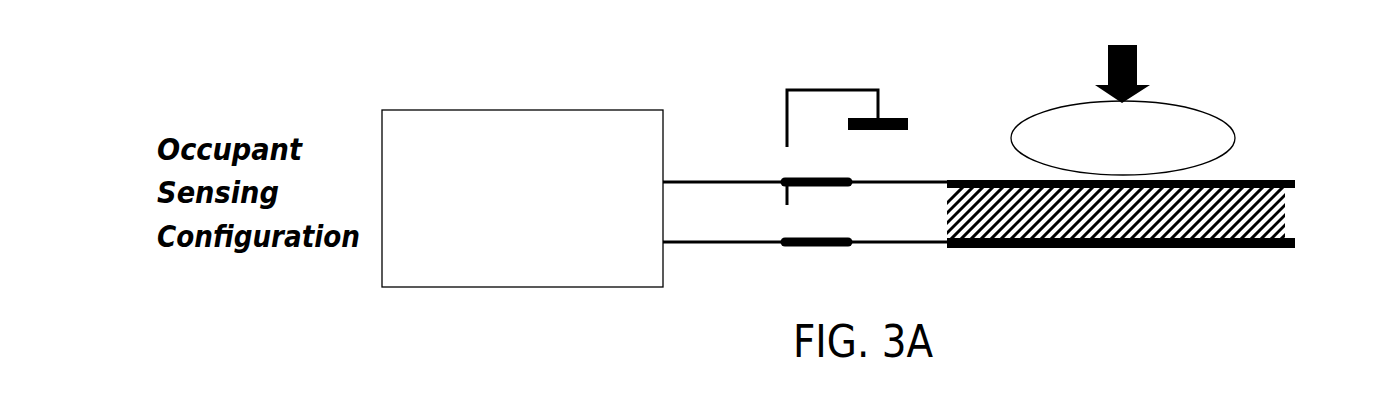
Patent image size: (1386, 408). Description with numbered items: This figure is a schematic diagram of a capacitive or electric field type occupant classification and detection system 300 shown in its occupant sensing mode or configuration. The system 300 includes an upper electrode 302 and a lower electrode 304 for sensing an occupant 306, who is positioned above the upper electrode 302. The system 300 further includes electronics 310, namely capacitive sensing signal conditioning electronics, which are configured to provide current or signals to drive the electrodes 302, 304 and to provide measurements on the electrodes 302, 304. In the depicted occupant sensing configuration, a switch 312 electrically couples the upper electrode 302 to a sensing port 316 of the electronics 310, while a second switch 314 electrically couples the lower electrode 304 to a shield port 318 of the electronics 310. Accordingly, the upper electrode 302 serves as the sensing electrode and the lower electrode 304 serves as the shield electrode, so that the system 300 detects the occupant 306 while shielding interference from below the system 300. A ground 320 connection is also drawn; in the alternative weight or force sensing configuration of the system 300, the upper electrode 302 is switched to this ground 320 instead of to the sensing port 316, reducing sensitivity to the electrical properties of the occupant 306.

The system 300 is at (997, 67).
The upper electrode 302 is at (1272, 180).
The lower electrode 304 is at (1263, 248).
The occupant 306 is at (1212, 115).
The electronics 310 is at (567, 110).
The switch 312 is at (848, 186).
The switch 314 is at (830, 246).
The sensing port 316 is at (670, 182).
The shield port 318 is at (670, 242).
The ground 320 is at (908, 130).